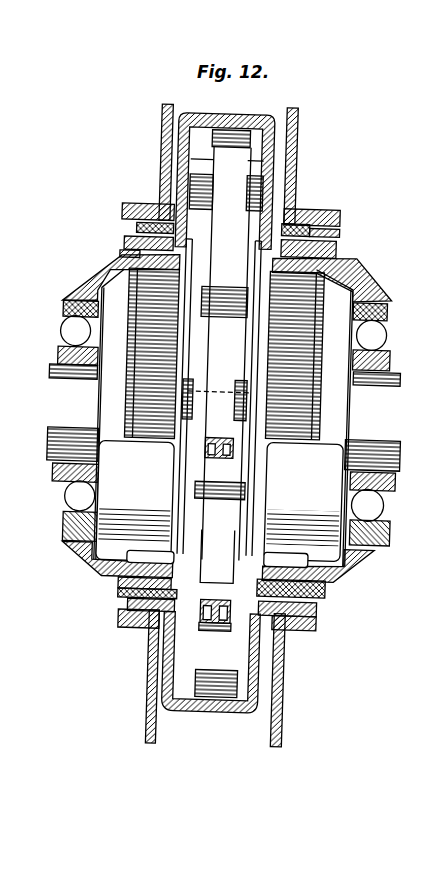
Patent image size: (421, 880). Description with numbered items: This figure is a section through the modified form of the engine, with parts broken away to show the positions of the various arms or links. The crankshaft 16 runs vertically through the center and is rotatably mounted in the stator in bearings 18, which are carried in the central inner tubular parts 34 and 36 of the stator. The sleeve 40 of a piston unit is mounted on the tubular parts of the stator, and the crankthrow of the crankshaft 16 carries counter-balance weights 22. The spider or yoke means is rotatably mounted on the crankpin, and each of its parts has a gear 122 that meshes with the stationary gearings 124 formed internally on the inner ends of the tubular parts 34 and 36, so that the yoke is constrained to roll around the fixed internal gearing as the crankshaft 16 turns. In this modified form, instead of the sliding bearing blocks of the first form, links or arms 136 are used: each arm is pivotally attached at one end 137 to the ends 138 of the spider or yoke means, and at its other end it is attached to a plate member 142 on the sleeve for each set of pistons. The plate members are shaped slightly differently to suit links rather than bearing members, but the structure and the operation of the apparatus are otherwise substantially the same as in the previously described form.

The plate member 142 is at (227, 120).
The ends of the spider or yoke means 138 is at (230, 163).
The end of the arm 137 is at (219, 397).
The links or arms 136 is at (226, 233).
The sleeve 40 is at (131, 230).
The tubular part 36 is at (125, 246).
The tubular part 34 is at (353, 274).
The crankshaft 16 is at (225, 417).
The bearings 18 is at (217, 416).
The counter-balance weights 22 is at (224, 414).
The gear 122 is at (285, 423).
The stationary gearings 124 is at (155, 559).